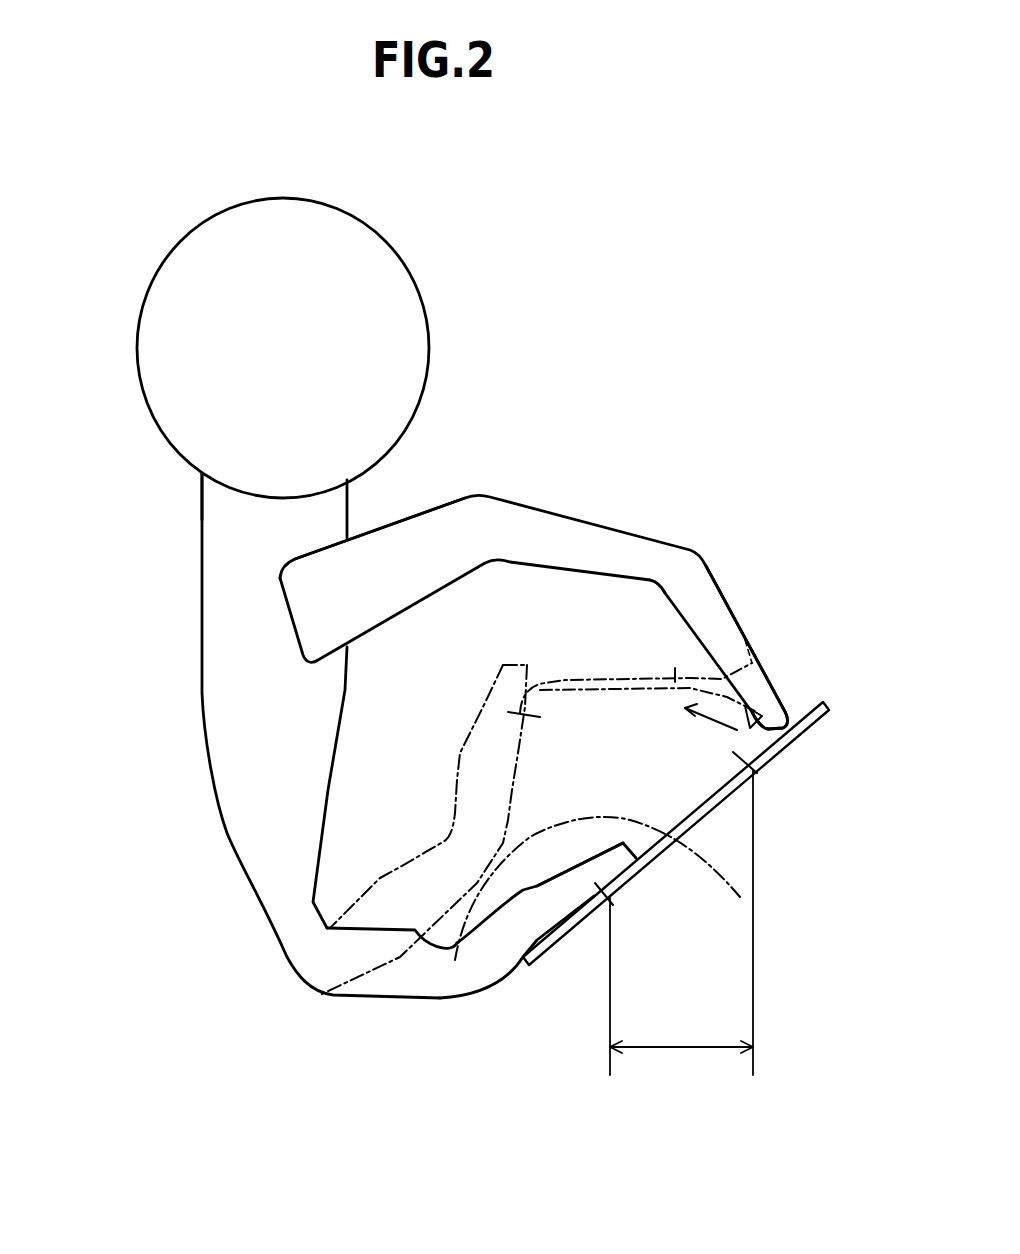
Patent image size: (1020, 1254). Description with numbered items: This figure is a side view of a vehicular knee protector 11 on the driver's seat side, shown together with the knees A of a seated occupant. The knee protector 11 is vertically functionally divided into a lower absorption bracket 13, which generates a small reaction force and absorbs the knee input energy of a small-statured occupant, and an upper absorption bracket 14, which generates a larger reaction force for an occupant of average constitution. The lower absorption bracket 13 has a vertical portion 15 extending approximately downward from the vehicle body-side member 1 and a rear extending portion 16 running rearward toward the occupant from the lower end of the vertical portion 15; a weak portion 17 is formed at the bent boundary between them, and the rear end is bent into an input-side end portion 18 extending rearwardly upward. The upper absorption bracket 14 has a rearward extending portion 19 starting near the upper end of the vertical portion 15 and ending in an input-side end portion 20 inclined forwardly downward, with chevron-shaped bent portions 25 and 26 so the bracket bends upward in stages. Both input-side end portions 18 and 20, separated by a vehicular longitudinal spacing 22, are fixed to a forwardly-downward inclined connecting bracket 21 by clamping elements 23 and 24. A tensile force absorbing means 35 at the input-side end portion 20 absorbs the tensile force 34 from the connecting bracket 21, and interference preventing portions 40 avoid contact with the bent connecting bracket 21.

The vehicle body-side member 1 is at (137, 370).
The knee protector 11 is at (172, 930).
The lower absorption bracket 13 is at (182, 777).
The upper absorption bracket 14 is at (553, 410).
The vertical portion 15 is at (210, 578).
The rear extending portion 16 is at (415, 982).
The weak portion 17 is at (270, 958).
The input-side end portion 18 is at (537, 927).
The rearward extending portion 19 is at (603, 460).
The input-side end portion 20 is at (760, 757).
The connecting bracket 21 is at (703, 812).
The vehicular longitudinal spacing 22 is at (678, 1050).
The clamping element 23 is at (603, 905).
The clamping element 24 is at (758, 775).
The bent portion 25 is at (478, 497).
The bent portion 26 is at (700, 557).
The tensile force 34 is at (717, 720).
The tensile force absorbing means 35 is at (780, 632).
The interference preventing portion 40 is at (772, 703).
The knees A is at (457, 962).